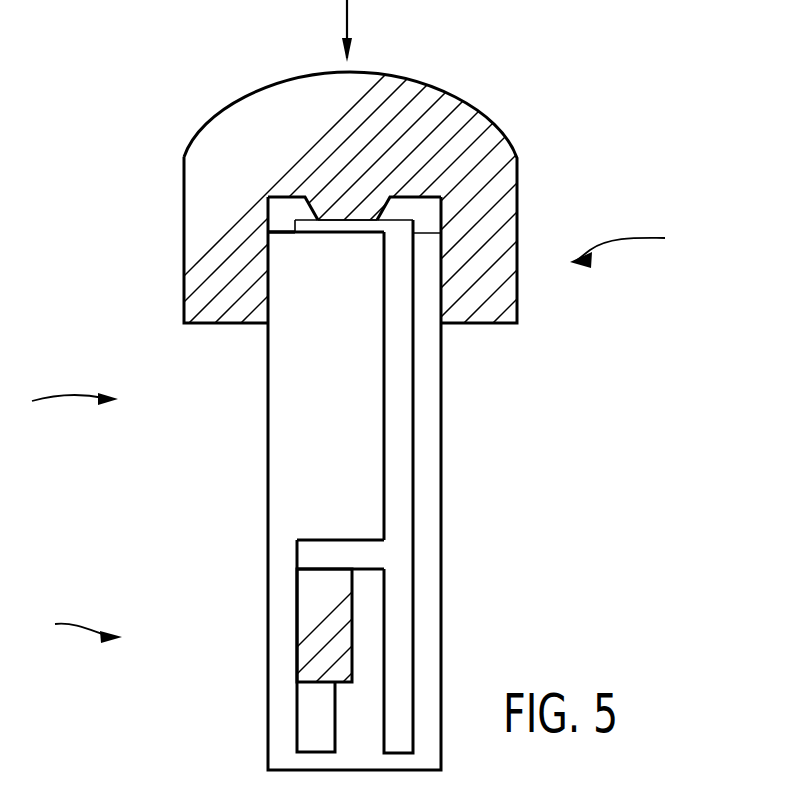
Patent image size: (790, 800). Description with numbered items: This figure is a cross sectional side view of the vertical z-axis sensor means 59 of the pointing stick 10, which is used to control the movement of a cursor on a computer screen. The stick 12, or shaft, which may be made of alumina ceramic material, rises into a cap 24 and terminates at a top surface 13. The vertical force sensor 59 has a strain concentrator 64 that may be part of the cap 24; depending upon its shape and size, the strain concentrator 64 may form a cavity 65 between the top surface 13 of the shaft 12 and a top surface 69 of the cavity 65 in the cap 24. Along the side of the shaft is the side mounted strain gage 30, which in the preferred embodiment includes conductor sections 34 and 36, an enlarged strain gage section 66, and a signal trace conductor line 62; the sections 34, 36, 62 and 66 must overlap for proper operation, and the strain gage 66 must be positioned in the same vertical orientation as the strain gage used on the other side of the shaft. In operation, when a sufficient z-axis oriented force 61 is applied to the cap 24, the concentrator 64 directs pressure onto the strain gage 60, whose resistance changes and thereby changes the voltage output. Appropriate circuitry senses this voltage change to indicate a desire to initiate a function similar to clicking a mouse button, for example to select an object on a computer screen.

The pointing stick 10 is at (60, 403).
The stick 12 is at (287, 397).
The top surface 13 is at (282, 237).
The cap 24 is at (488, 120).
The side mounted strain gage 30 is at (70, 627).
The conductor section 34 is at (297, 545).
The conductor section 36 is at (310, 730).
The vertical z-axis sensor means 59 is at (635, 246).
The strain gage 60 is at (397, 230).
The z-axis oriented force 61 is at (347, 23).
The signal trace conductor line 62 is at (397, 442).
The strain concentrator 64 is at (340, 214).
The cavity 65 is at (285, 215).
The enlarged strain gage section 66 is at (318, 614).
The top surface of cavity 69 is at (287, 197).